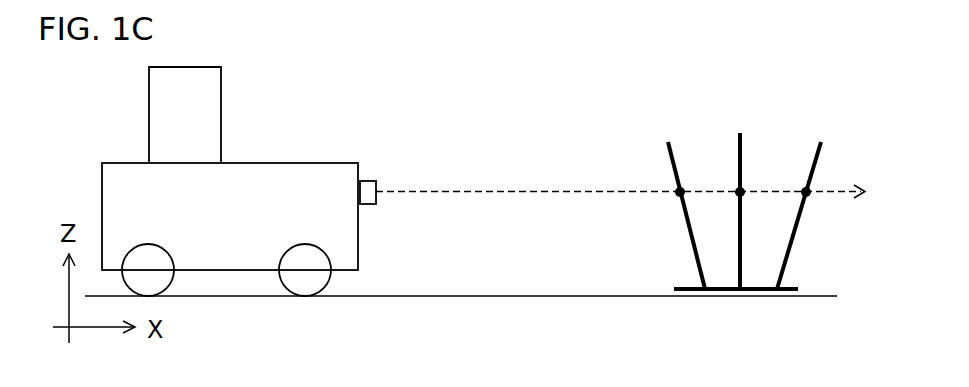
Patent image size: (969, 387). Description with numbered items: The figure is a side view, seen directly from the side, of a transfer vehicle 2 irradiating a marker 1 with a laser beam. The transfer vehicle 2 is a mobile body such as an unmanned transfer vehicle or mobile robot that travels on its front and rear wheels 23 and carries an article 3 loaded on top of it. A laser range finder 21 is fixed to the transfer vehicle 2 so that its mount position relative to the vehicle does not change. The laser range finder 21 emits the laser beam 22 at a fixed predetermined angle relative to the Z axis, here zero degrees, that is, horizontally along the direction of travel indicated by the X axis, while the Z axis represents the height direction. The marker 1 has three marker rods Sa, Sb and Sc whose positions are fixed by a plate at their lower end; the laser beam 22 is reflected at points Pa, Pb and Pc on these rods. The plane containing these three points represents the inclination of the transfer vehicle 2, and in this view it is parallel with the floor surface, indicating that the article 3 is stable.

The marker 1 is at (727, 291).
The transfer vehicle 2 is at (317, 163).
The article 3 is at (221, 67).
The laser range finder 21 is at (364, 181).
The laser beam 22 is at (455, 191).
The front and rear wheels 23 is at (165, 285).